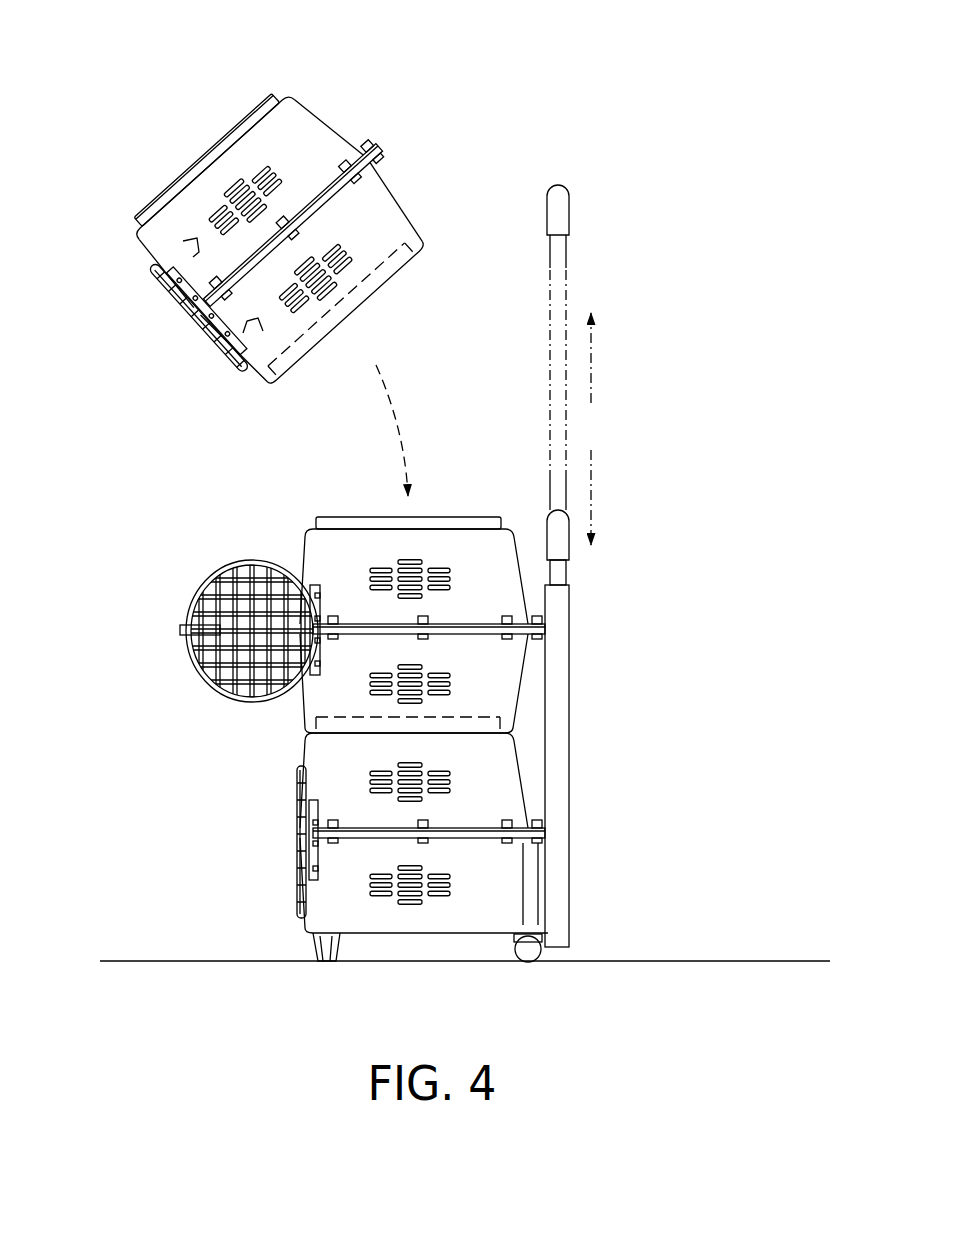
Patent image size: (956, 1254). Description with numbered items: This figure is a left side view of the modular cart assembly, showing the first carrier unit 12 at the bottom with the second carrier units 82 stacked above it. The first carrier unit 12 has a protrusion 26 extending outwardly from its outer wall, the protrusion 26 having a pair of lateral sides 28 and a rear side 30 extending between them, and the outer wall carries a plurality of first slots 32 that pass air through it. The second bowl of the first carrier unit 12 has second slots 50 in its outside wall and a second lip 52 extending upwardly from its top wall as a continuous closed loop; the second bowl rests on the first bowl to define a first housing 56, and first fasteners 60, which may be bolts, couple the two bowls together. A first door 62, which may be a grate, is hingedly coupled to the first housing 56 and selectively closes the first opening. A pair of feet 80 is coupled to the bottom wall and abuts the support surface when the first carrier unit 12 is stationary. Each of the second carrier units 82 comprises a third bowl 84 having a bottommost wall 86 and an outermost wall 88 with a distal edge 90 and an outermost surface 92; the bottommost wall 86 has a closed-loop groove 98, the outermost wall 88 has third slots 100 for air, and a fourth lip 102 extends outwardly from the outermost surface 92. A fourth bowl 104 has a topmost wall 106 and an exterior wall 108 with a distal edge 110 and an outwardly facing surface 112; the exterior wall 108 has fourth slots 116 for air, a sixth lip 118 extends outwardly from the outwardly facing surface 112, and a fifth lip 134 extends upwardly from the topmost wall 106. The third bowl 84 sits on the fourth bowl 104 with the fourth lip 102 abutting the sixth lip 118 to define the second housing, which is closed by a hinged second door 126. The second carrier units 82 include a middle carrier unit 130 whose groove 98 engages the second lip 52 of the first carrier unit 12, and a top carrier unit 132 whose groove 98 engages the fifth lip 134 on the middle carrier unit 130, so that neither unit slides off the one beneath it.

The first carrier unit 12 is at (408, 615).
The protrusion 26 is at (547, 858).
The lateral sides 28 is at (497, 907).
The rear side 30 is at (545, 888).
The first slots 32 is at (412, 893).
The second slots 50 is at (378, 773).
The second lip 52 is at (328, 715).
The first housing 56 is at (232, 842).
The first fasteners 60 is at (505, 822).
The first door 62 is at (300, 915).
The feet 80 is at (330, 962).
The second carrier units 82 is at (307, 239).
The third bowl 84 is at (382, 170).
The bottommost wall 86 is at (392, 270).
The outermost wall 88 is at (343, 215).
The distal edge 90 is at (388, 187).
The outermost surface 92 is at (250, 322).
The groove 98 is at (318, 342).
The third slots 100 is at (333, 270).
The fourth lip 102 is at (222, 320).
The fourth bowl 104 is at (148, 263).
The topmost wall 106 is at (270, 180).
The exterior wall 108 is at (261, 113).
The distal edge 110 is at (377, 168).
The outwardly facing surface 112 is at (186, 245).
The fourth slots 116 is at (213, 215).
The sixth lip 118 is at (365, 165).
The second door 126 is at (190, 608).
The middle carrier unit 130 is at (472, 508).
The top carrier unit 132 is at (307, 231).
The fifth lip 134 is at (258, 97).